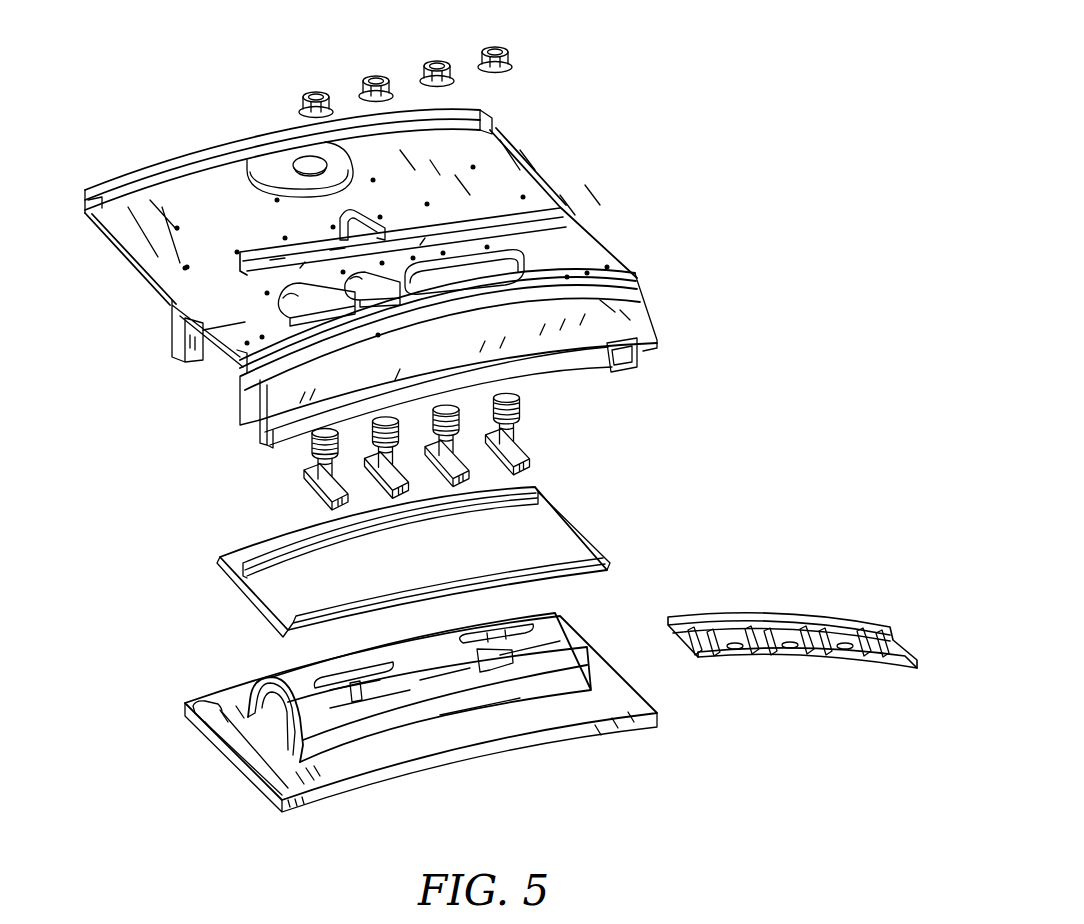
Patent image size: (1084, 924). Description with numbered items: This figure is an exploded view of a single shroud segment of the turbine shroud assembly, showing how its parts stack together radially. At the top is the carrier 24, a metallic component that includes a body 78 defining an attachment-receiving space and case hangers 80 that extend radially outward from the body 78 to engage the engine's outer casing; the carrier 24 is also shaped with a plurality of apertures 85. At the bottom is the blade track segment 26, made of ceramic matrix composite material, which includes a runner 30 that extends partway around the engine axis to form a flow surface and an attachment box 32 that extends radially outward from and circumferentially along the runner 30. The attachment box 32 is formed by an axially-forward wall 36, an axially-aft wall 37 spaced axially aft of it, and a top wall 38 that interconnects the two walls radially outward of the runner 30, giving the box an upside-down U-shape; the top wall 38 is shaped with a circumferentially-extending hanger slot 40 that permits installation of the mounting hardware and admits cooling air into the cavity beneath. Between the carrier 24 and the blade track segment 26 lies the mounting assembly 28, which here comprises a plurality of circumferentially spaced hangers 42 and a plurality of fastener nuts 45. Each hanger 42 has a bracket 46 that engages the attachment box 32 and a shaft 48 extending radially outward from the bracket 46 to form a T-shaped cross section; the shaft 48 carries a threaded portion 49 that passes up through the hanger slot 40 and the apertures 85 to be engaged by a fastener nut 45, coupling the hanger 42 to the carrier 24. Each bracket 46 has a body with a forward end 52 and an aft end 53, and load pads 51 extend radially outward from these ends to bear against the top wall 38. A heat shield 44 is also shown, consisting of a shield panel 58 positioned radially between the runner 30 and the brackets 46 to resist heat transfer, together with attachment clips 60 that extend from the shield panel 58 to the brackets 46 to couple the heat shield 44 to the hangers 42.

The carrier 24 is at (404, 265).
The blade track segment 26 is at (380, 709).
The mounting assembly 28 is at (792, 558).
The runner 30 is at (558, 753).
The attachment box 32 is at (363, 699).
The axially-forward wall 36 is at (247, 706).
The axially-aft wall 37 is at (315, 738).
The top wall 38 is at (388, 672).
The circumferentially-extending hanger slot 40 is at (500, 634).
The hanger 42 is at (431, 499).
The heat shield 44 is at (792, 618).
The fastener nut 45 is at (519, 48).
The bracket 46 is at (257, 474).
The shaft 48 is at (533, 412).
The threaded portion 49 is at (526, 419).
The load pad 51 is at (386, 400).
The forward end 52 is at (325, 444).
The aft end 53 is at (313, 462).
The shield panel 58 is at (808, 664).
The attachment clip 60 is at (711, 615).
The body 78 is at (565, 260).
The case hanger 80 is at (457, 210).
The aperture 85 is at (364, 296).